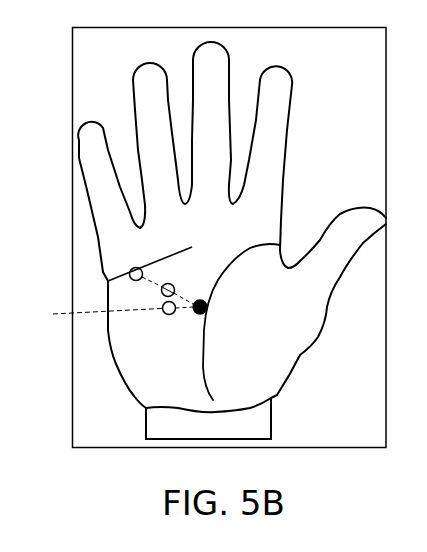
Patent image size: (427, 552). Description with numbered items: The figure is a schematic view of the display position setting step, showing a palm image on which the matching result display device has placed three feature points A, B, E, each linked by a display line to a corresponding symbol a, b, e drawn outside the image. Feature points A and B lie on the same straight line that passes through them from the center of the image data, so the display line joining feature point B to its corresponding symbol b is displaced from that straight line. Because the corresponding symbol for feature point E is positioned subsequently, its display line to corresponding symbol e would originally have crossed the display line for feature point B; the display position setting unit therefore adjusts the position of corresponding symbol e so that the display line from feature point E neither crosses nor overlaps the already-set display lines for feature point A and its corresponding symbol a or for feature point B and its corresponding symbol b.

The corresponding symbol a is at (130, 271).
The corresponding symbol b is at (245, 252).
The corresponding symbol e is at (164, 312).
The feature point A is at (135, 261).
The feature point B is at (172, 281).
The feature point E is at (170, 322).